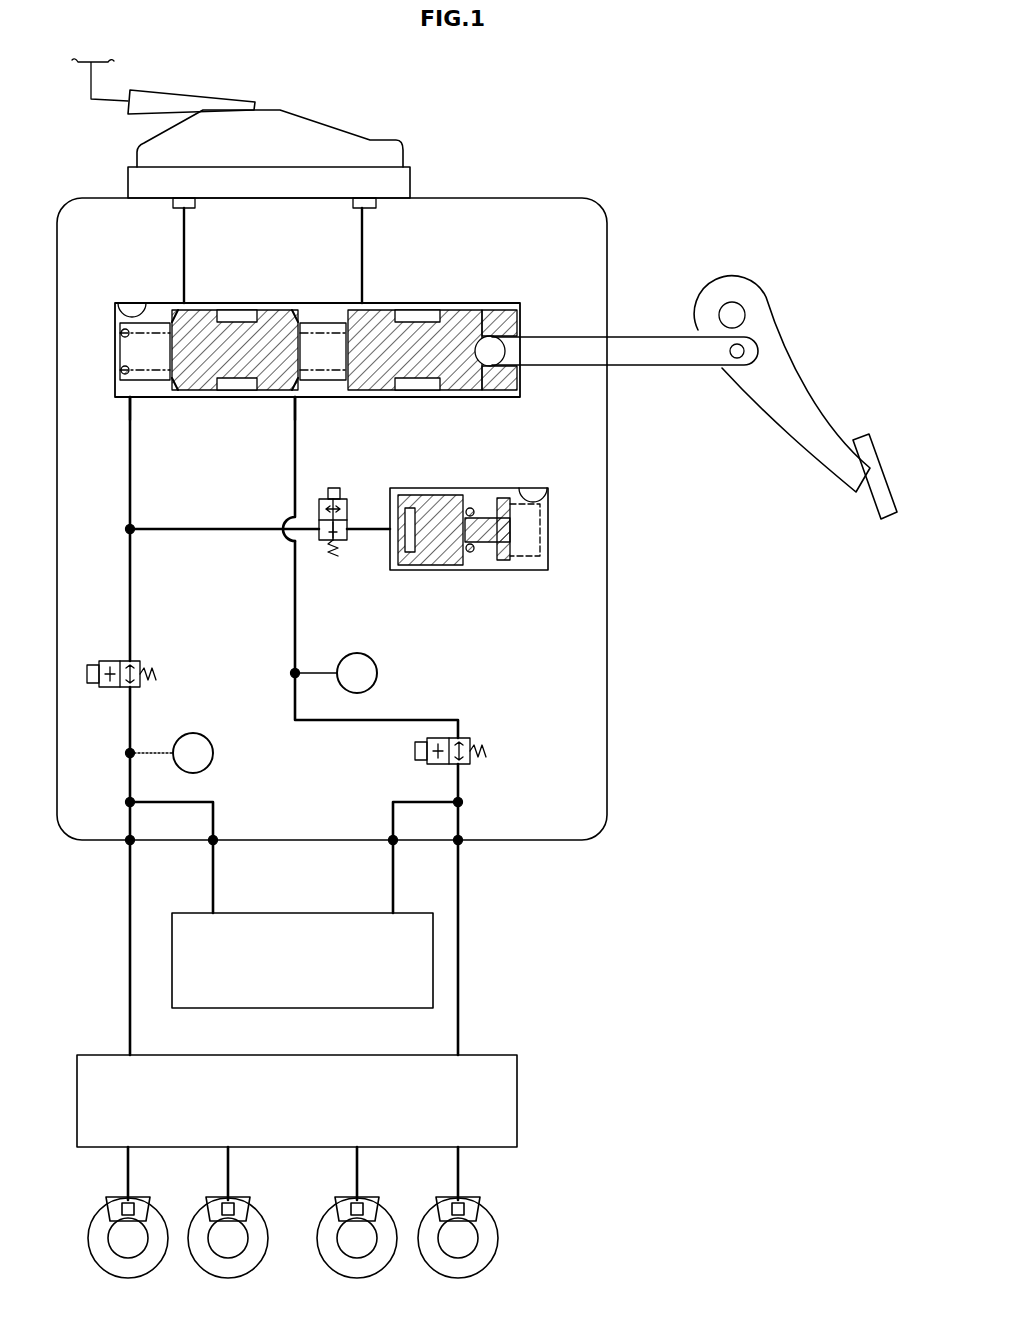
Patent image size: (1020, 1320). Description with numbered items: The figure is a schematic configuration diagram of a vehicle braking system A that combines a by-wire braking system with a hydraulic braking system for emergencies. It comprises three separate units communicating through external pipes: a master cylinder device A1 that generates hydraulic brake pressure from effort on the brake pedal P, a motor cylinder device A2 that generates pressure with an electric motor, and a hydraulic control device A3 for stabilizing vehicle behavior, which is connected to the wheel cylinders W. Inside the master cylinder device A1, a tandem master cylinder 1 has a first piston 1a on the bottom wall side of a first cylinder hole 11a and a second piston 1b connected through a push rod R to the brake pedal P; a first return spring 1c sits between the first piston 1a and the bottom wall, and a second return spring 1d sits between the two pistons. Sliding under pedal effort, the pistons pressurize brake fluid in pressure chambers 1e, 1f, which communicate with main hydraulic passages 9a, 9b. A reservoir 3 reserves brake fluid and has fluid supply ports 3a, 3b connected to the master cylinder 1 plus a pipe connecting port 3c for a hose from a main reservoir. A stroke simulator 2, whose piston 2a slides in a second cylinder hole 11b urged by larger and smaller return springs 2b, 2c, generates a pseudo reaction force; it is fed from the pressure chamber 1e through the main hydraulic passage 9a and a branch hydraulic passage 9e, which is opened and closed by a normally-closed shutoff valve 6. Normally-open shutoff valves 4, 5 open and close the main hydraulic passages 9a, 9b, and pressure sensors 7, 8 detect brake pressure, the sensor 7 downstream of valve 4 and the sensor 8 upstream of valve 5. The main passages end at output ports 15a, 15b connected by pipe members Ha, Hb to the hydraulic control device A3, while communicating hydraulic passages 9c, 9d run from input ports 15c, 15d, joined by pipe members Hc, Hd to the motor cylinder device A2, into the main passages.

The vehicle braking system A is at (515, 172).
The master cylinder device A1 is at (607, 742).
The motor cylinder device A2 is at (320, 972).
The hydraulic control device A3 is at (317, 1112).
The tandem master cylinder 1 is at (388, 298).
The first piston 1a is at (238, 392).
The second piston 1b is at (432, 392).
The first return spring 1c is at (160, 398).
The second return spring 1d is at (340, 398).
The pressure chamber 1e is at (158, 362).
The pressure chamber 1f is at (332, 362).
The stroke simulator 2 is at (487, 482).
The piston 2a is at (438, 570).
The larger return spring 2b is at (488, 570).
The smaller return spring 2c is at (530, 570).
The reservoir 3 is at (318, 112).
The fluid supply port 3a is at (180, 212).
The fluid supply port 3b is at (358, 212).
The pipe connecting port 3c is at (185, 97).
The normally-open shutoff valve 4 is at (140, 680).
The normally-open shutoff valve 5 is at (470, 764).
The normally-closed shutoff valve 6 is at (318, 545).
The pressure sensor 7 is at (170, 753).
The pressure sensor 8 is at (334, 673).
The main hydraulic passage 9a is at (130, 588).
The main hydraulic passage 9b is at (292, 624).
The communicating hydraulic passage 9c is at (198, 802).
The communicating hydraulic passage 9d is at (410, 802).
The branch hydraulic passage 9e is at (244, 532).
The first cylinder hole 11a is at (115, 307).
The second cylinder hole 11b is at (548, 512).
The output port 15a is at (124, 836).
The output port 15b is at (464, 836).
The input port 15c is at (218, 836).
The input port 15d is at (390, 836).
The pipe member Ha is at (128, 878).
The pipe member Hb is at (462, 878).
The pipe member Hc is at (216, 876).
The pipe member Hd is at (390, 876).
The push rod R is at (656, 336).
The brake pedal P is at (866, 515).
The wheel cylinder W is at (140, 1196).